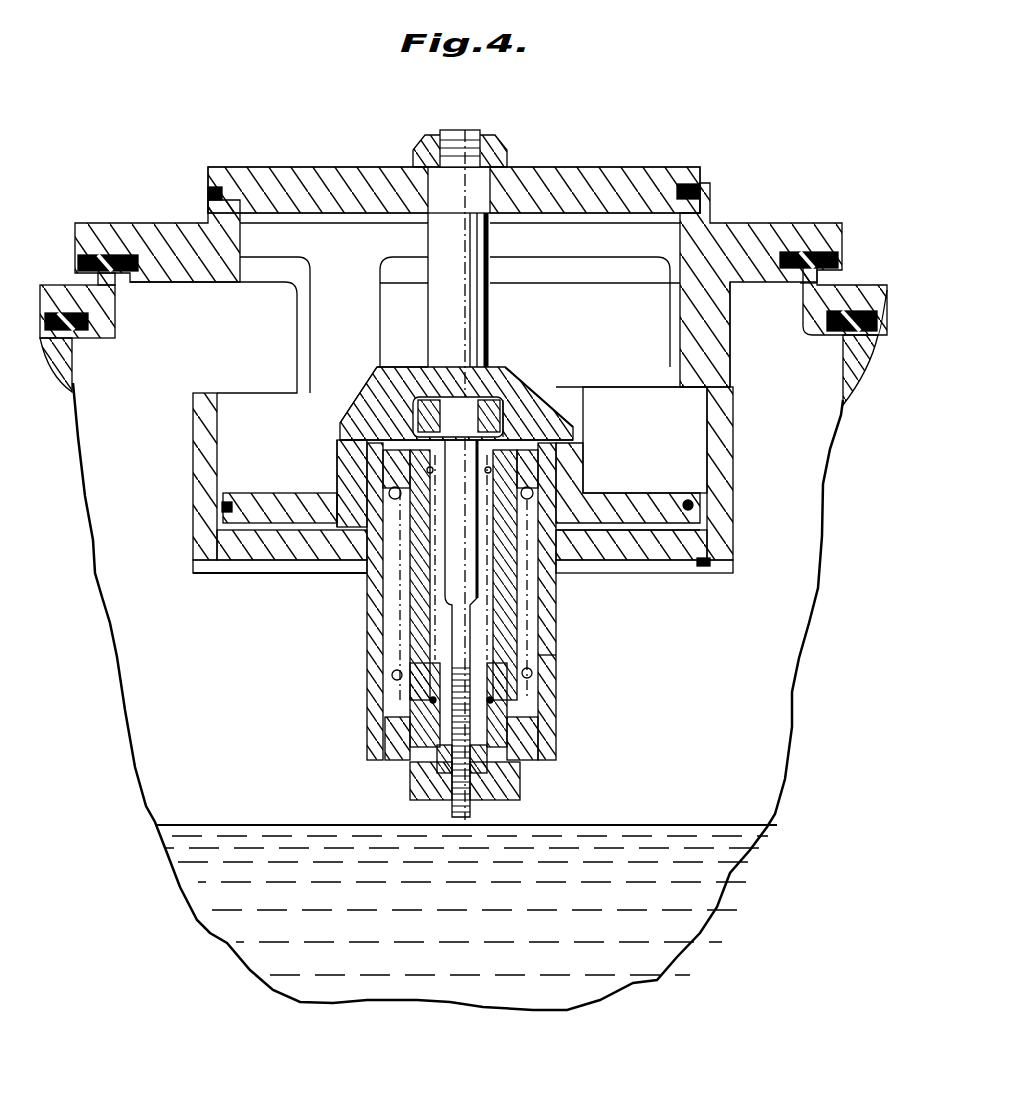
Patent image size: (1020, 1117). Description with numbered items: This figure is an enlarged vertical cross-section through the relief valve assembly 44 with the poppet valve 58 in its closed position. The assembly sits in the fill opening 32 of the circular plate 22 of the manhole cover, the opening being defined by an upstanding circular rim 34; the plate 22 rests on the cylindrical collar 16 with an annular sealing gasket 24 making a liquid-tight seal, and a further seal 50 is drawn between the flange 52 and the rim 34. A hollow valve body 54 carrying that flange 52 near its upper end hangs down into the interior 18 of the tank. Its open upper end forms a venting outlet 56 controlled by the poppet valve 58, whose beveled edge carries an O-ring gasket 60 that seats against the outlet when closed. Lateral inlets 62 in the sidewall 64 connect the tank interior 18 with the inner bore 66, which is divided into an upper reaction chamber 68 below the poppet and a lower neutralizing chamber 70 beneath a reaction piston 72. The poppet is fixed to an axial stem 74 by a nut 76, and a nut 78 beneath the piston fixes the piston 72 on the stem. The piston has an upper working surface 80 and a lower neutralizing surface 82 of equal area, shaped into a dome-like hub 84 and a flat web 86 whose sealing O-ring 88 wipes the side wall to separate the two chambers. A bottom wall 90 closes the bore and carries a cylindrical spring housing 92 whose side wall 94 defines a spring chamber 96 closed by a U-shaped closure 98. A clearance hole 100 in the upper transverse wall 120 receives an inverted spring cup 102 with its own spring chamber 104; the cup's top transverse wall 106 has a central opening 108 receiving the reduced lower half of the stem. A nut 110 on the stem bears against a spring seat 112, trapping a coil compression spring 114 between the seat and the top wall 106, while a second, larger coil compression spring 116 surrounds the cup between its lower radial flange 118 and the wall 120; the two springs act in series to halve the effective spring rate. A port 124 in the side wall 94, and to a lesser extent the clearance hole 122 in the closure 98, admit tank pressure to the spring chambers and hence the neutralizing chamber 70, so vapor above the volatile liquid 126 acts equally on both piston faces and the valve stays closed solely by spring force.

The relief valve assembly 44 is at (345, 155).
The venting outlet 56 is at (232, 228).
The poppet valve 58 is at (567, 178).
The O-ring gasket 60 is at (705, 180).
The flange 52 is at (805, 235).
The seal ring 50 is at (843, 258).
The circular rim 34 is at (825, 283).
The circular plate 22 is at (878, 310).
The annular sealing gasket 24 is at (843, 332).
The cylindrical collar 16 is at (860, 355).
The nut 76 is at (500, 150).
The axial stem 74 is at (478, 316).
The nut 78 is at (497, 388).
The top transverse wall 106 is at (543, 387).
The neutralizing chamber 70 is at (560, 395).
The dome-like hub 84 is at (585, 405).
The upper working surface 80 is at (590, 445).
The lower neutralizing surface 82 is at (640, 515).
The inner bore 66 is at (680, 475).
The lateral inlets 62 is at (582, 252).
The reaction chamber 68 is at (346, 245).
The fill opening 32 is at (776, 368).
The sidewall 64 is at (722, 325).
The hollow valve body 54 is at (740, 400).
The clearance hole 100 is at (365, 385).
The central opening 108 is at (390, 392).
The upper transverse wall 120 is at (355, 455).
The reaction piston 72 is at (335, 450).
The web 86 is at (285, 500).
The sealing O-ring 88 is at (222, 508).
The bottom wall 90 is at (280, 570).
The second coil compression spring 116 is at (400, 600).
The spring chamber 104 is at (440, 635).
The spring cup 102 is at (420, 645).
The lower radial flange 118 is at (395, 705).
The coil compression spring 114 is at (415, 715).
The nut 110 is at (440, 755).
The spring seat 112 is at (535, 740).
The spring chamber 96 is at (535, 665).
The spring housing 92 is at (565, 635).
The side wall 94 is at (552, 605).
The port 124 is at (560, 578).
The closure 98 is at (520, 780).
The clearance hole 122 is at (470, 795).
The volatile liquid 126 is at (680, 826).
The interior 18 is at (790, 710).